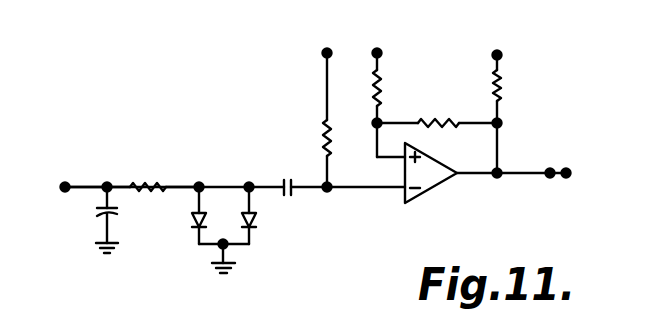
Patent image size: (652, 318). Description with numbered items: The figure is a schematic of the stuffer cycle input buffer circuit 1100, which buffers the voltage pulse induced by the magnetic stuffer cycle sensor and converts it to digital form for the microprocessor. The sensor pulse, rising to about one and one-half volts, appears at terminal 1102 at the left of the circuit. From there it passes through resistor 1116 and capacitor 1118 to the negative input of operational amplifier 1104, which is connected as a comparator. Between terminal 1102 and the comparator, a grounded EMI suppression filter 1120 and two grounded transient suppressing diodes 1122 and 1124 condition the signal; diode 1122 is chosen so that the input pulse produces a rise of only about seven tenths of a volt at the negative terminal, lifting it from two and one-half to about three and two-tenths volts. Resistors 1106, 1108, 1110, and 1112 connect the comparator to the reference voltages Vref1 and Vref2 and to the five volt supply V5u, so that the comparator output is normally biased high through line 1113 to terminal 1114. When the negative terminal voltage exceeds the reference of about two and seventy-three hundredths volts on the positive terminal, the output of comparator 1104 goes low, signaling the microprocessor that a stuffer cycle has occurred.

The stuffer cycle input buffer circuit 1100 is at (523, 204).
The terminal 1102 is at (64, 186).
The operational amplifier 1104 is at (430, 183).
The resistor 1106 is at (323, 122).
The resistor 1108 is at (381, 74).
The resistor 1110 is at (460, 118).
The resistor 1112 is at (503, 86).
The line 1113 is at (512, 173).
The terminal 1114 is at (567, 173).
The resistor 1116 is at (130, 185).
The capacitor 1118 is at (291, 184).
The EMI suppression filter 1120 is at (98, 215).
The transient suppressing diode 1122 is at (191, 227).
The transient suppressing diode 1124 is at (257, 228).